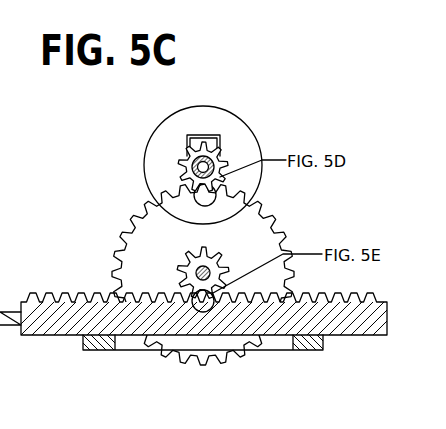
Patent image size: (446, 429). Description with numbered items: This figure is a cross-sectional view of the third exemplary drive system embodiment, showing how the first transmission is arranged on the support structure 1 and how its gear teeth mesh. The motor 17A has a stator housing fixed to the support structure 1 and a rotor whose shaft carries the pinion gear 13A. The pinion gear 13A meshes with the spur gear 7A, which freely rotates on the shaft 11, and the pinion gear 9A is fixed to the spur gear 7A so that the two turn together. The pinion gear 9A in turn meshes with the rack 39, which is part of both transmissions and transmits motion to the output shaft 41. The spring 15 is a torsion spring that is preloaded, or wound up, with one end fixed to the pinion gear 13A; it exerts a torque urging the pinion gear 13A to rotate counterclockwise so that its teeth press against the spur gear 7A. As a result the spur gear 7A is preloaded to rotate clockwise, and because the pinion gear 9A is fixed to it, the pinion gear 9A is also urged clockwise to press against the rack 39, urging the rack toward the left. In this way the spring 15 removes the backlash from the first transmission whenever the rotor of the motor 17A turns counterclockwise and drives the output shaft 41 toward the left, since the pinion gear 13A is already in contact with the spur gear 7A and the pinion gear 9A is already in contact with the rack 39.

The support structure 1 is at (98, 350).
The spur gear 7A is at (132, 226).
The pinion gear 9A is at (213, 252).
The shaft 11 is at (194, 277).
The pinion gear 13A is at (182, 175).
The spring 15 is at (187, 163).
The motor 17A is at (249, 127).
The rack 39 is at (63, 293).
The output shaft 41 is at (2, 327).